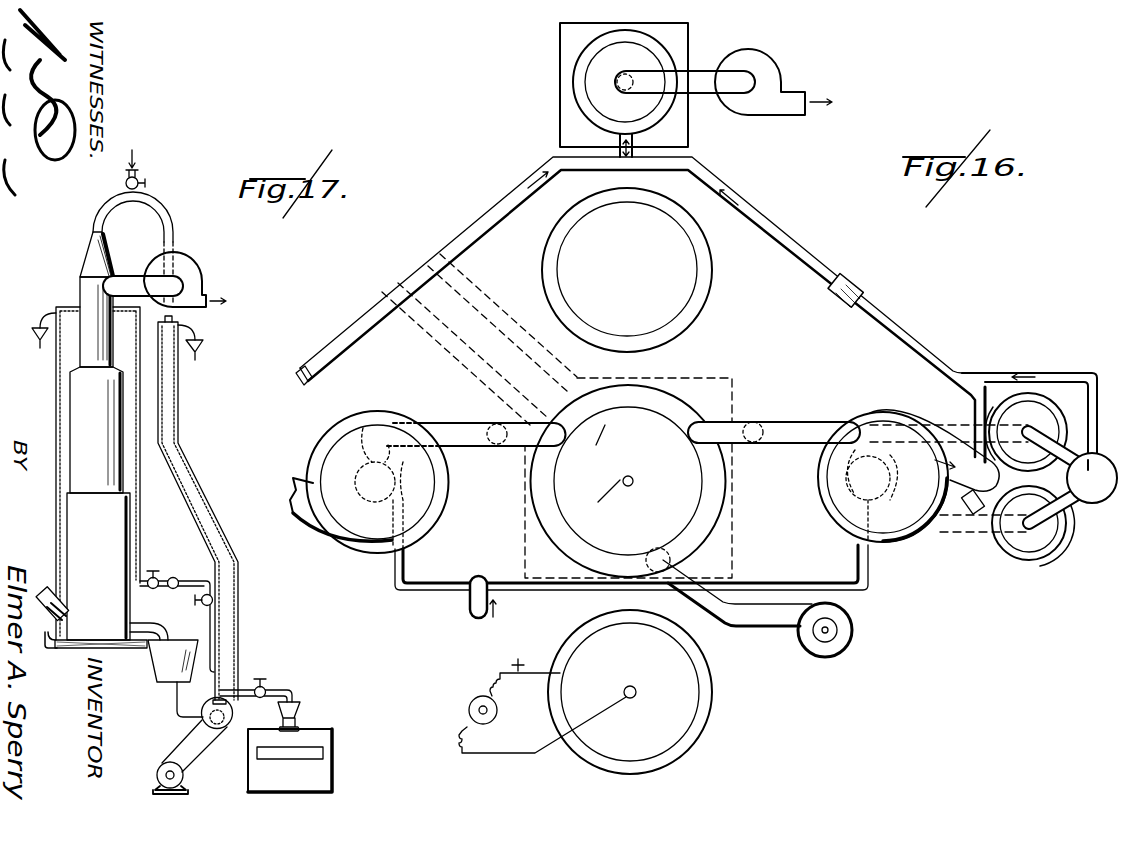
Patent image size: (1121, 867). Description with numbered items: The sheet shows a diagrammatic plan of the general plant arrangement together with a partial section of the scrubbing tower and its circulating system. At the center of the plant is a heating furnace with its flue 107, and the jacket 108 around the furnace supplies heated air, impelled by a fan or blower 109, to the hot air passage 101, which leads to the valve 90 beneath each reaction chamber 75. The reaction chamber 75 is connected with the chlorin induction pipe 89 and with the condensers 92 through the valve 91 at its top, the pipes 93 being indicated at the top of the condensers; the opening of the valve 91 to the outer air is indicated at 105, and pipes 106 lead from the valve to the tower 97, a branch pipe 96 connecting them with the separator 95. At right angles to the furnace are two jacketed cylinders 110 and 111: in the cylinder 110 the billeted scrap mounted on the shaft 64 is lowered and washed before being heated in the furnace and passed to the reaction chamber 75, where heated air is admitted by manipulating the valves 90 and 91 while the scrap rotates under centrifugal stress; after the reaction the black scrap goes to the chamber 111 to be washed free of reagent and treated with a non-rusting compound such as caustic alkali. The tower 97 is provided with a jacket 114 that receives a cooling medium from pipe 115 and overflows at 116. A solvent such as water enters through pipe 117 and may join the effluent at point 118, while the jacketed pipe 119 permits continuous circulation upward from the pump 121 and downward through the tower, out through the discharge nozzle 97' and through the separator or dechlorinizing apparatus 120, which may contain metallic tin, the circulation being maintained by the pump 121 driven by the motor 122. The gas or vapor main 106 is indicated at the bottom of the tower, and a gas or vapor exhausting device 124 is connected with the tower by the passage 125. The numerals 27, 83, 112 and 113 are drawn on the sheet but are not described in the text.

In FIG. 16, the pump 27 is at (468, 600).
In FIG. 16, the shaft 64 is at (637, 689).
In FIG. 16, the reaction chamber 75 is at (598, 482).
In FIG. 16, the inlet 83 is at (293, 495).
In FIG. 16, the chlorin induction pipe 89 is at (954, 430).
In FIG. 16, the valve 90 is at (908, 476).
In FIG. 16, the valve 91 is at (983, 474).
In FIG. 16, the condensers 92 is at (1029, 479).
In FIG. 16, the pipes 93 is at (1042, 442).
In FIG. 16, the separator 95 is at (1103, 497).
In FIG. 16, the branch pipe 96 is at (1062, 375).
In FIG. 16, the tower 97 is at (598, 90).
In FIG. 17, the tower 97 is at (85, 436).
In FIG. 17, the discharge nozzle 97' is at (152, 618).
In FIG. 16, the hot air passage 101 is at (449, 429).
In FIG. 16, the opening to outer air 105 is at (988, 520).
In FIG. 16, the pipes (gas or vapor main) 106 is at (635, 307).
In FIG. 17, the pipes (gas or vapor main) 106 is at (48, 592).
In FIG. 16, the flue 107 is at (479, 339).
In FIG. 16, the jacket around heating furnace 108 is at (712, 493).
In FIG. 16, the fan or blower 109 is at (850, 622).
In FIG. 16, the jacketed cylinder (pretreating vessel) 110 is at (627, 270).
In FIG. 16, the jacketed cylinder (chamber) 111 is at (603, 745).
In FIG. 16, the generator 112 is at (497, 709).
In FIG. 16, the wire 113 is at (542, 740).
In FIG. 17, the jacket 114 is at (54, 404).
In FIG. 17, the pipe 115 is at (176, 578).
In FIG. 17, the overflow 116 is at (104, 335).
In FIG. 17, the pipe 117 is at (140, 174).
In FIG. 17, the point 118 is at (232, 688).
In FIG. 17, the jacketed pipe 119 is at (185, 478).
In FIG. 17, the separator or dechlorinizing apparatus 120 is at (160, 678).
In FIG. 17, the pump 121 is at (198, 735).
In FIG. 17, the motor 122 is at (162, 767).
In FIG. 16, the gas or vapor exhausting device 124 is at (773, 95).
In FIG. 17, the gas or vapor exhausting device 124 is at (186, 282).
In FIG. 16, the passage 125 is at (702, 80).
In FIG. 17, the passage 125 is at (131, 279).